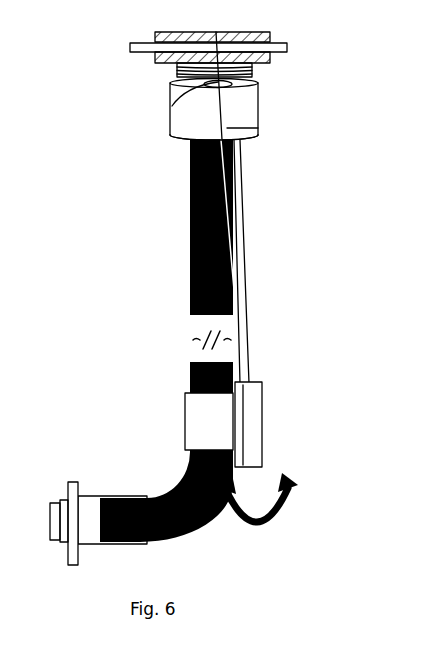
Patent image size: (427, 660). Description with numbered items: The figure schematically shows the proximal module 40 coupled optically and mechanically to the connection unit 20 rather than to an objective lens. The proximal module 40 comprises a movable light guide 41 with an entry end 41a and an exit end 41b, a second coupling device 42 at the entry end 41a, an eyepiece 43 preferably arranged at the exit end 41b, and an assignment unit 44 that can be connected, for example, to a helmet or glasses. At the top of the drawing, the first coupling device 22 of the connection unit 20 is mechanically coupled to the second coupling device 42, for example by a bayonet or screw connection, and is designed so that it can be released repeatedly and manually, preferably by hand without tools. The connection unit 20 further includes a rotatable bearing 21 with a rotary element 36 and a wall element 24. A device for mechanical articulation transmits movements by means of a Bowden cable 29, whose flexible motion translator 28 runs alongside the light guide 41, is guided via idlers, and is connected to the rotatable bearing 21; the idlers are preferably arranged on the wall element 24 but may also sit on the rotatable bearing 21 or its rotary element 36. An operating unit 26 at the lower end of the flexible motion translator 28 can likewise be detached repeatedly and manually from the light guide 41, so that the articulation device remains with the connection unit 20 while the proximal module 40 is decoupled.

The connection unit 20 is at (105, 25).
The rotatable bearing 21 is at (155, 33).
The first coupling device 22 is at (258, 83).
The wall element 24 is at (287, 47).
The operating unit 26 is at (250, 402).
The flexible motion translator 28 is at (250, 312).
The Bowden cable 29 is at (250, 272).
The rotary element 36 is at (272, 60).
The proximal module 40 is at (330, 82).
The light guide 41 is at (238, 202).
The entry end 41a is at (172, 135).
The exit end 41b is at (98, 522).
The second coupling device 42 is at (258, 132).
The eyepiece 43 is at (52, 503).
The assignment unit 44 is at (68, 482).